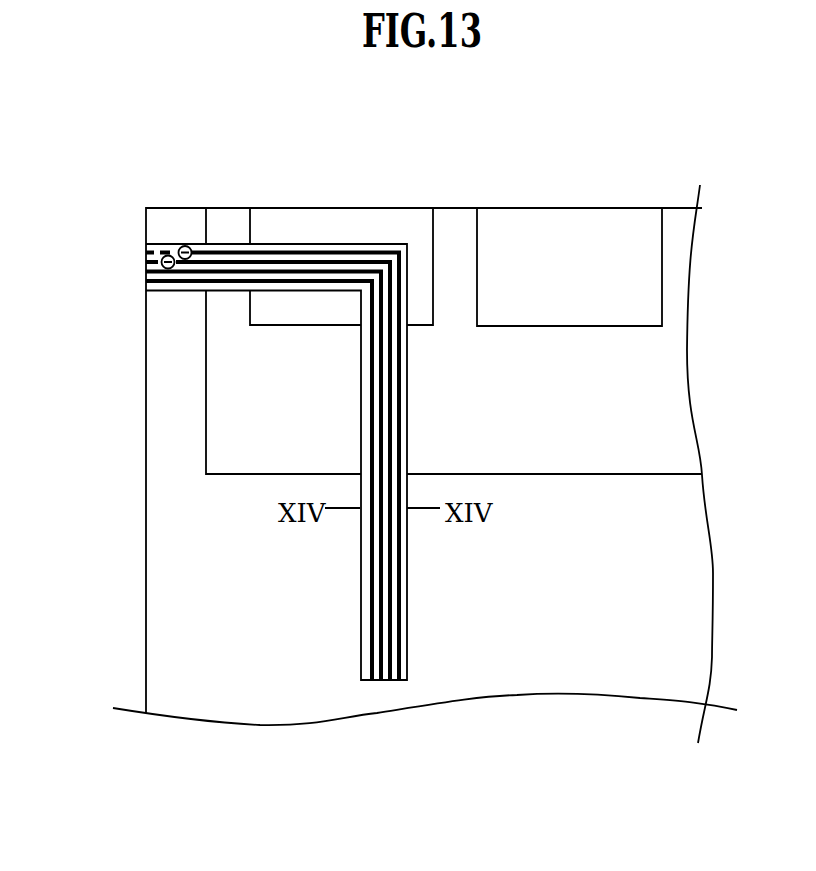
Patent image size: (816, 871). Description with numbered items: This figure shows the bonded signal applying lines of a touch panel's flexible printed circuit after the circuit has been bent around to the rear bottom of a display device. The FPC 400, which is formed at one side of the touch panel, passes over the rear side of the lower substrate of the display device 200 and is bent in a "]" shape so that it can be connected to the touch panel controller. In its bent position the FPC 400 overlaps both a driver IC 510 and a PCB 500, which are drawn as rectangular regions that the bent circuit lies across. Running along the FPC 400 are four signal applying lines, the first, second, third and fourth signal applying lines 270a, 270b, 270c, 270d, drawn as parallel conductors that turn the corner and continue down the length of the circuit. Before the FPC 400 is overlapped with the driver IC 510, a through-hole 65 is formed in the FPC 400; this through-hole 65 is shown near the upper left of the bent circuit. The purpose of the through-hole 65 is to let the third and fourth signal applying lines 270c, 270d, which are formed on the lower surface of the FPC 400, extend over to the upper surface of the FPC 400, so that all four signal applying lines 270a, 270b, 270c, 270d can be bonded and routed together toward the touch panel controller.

The display device 200 is at (155, 520).
The PCB 500 is at (578, 465).
The driver IC 510 is at (577, 218).
The FPC 400 is at (407, 585).
The first signal applying line 270a is at (399, 680).
The second signal applying line 270b is at (383, 680).
The third signal applying line 270c is at (378, 657).
The fourth signal applying line 270d is at (368, 611).
The through-hole 65 is at (184, 246).